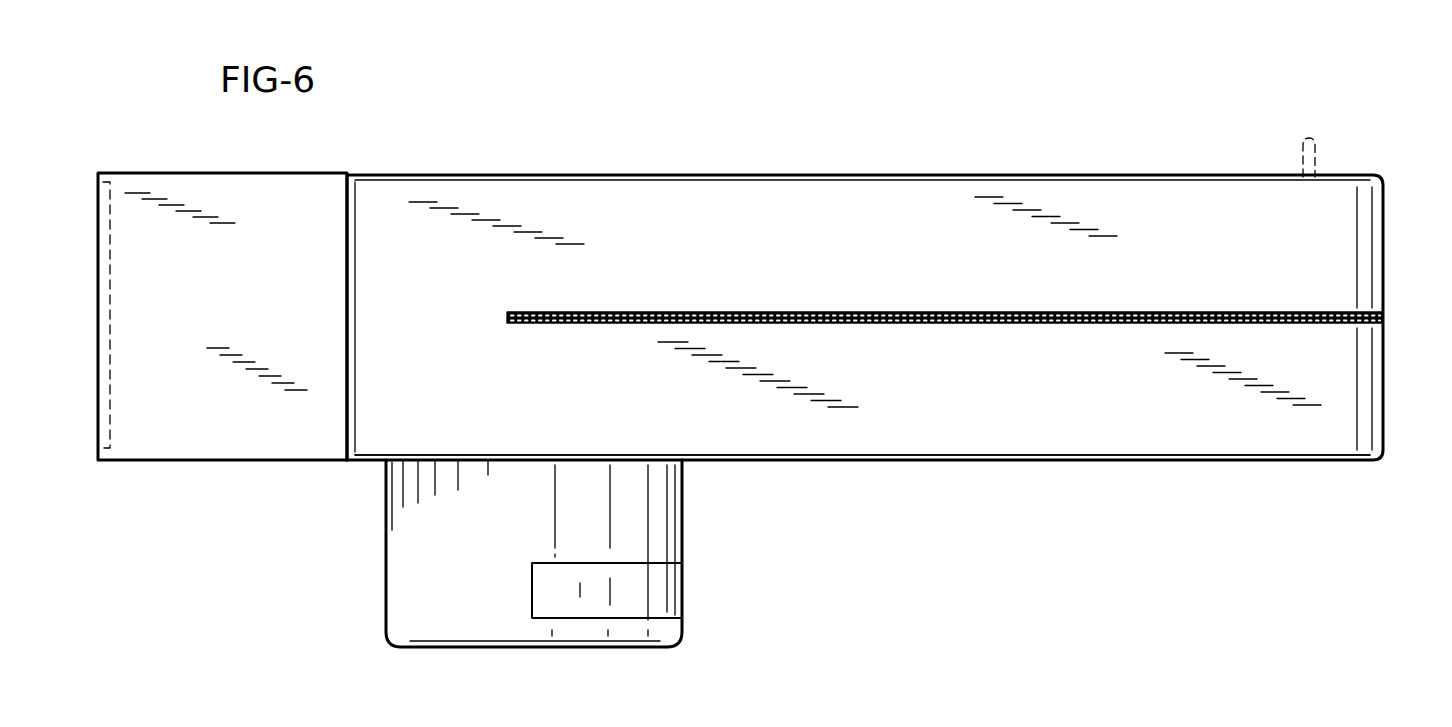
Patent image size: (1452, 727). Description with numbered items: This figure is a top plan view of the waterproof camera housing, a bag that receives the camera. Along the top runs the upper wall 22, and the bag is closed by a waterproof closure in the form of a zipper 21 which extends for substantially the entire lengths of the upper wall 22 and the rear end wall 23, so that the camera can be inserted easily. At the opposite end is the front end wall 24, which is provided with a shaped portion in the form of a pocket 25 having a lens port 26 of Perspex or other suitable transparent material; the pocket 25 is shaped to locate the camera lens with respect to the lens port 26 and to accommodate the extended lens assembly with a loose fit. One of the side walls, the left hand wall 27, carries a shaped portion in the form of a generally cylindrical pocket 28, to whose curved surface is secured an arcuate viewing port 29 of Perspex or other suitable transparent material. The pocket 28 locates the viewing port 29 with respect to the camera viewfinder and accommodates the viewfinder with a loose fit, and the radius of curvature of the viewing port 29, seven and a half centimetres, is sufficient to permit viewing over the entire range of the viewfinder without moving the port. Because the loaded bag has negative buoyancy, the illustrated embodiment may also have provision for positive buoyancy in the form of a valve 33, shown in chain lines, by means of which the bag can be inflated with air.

The zipper 21 is at (687, 312).
The upper wall 22 is at (508, 195).
The rear end wall 23 is at (1383, 238).
The front end wall 24 is at (347, 303).
The pocket 25 is at (232, 462).
The lens port 26 is at (98, 428).
The left hand wall 27 is at (997, 460).
The cylindrical pocket 28 is at (400, 545).
The viewing port 29 is at (552, 583).
The valve 33 is at (1303, 155).